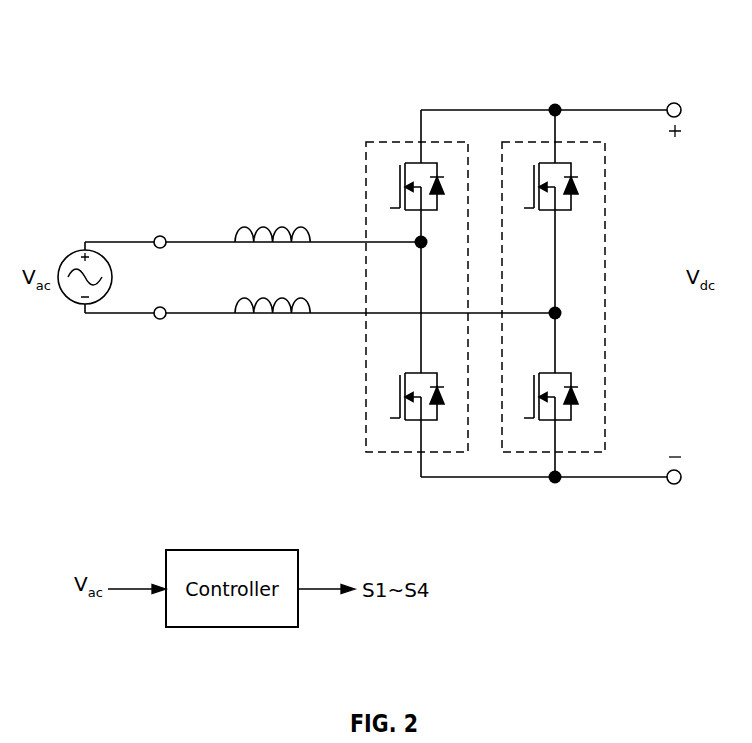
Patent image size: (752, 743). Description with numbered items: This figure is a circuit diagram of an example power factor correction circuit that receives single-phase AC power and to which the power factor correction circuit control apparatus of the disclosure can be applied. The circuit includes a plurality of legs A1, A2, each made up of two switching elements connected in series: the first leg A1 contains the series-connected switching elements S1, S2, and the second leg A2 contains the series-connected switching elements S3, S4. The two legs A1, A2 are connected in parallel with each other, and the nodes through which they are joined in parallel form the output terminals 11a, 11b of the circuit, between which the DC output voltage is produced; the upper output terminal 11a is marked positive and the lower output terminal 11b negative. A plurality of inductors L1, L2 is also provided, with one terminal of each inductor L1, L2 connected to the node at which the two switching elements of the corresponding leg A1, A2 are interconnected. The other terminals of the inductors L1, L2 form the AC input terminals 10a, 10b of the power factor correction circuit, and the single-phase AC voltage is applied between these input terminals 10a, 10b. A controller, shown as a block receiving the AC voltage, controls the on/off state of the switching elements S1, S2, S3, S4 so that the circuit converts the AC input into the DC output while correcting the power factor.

The AC input terminal 10a is at (160, 236).
The AC input terminal 10b is at (160, 319).
The output terminal 11a is at (674, 103).
The output terminal 11b is at (674, 484).
The leg A1 is at (453, 142).
The leg A2 is at (588, 142).
The inductor L1 is at (258, 223).
The inductor L2 is at (258, 323).
The switching element S1 is at (423, 201).
The switching element S2 is at (424, 412).
The switching element S3 is at (558, 202).
The switching element S4 is at (558, 412).